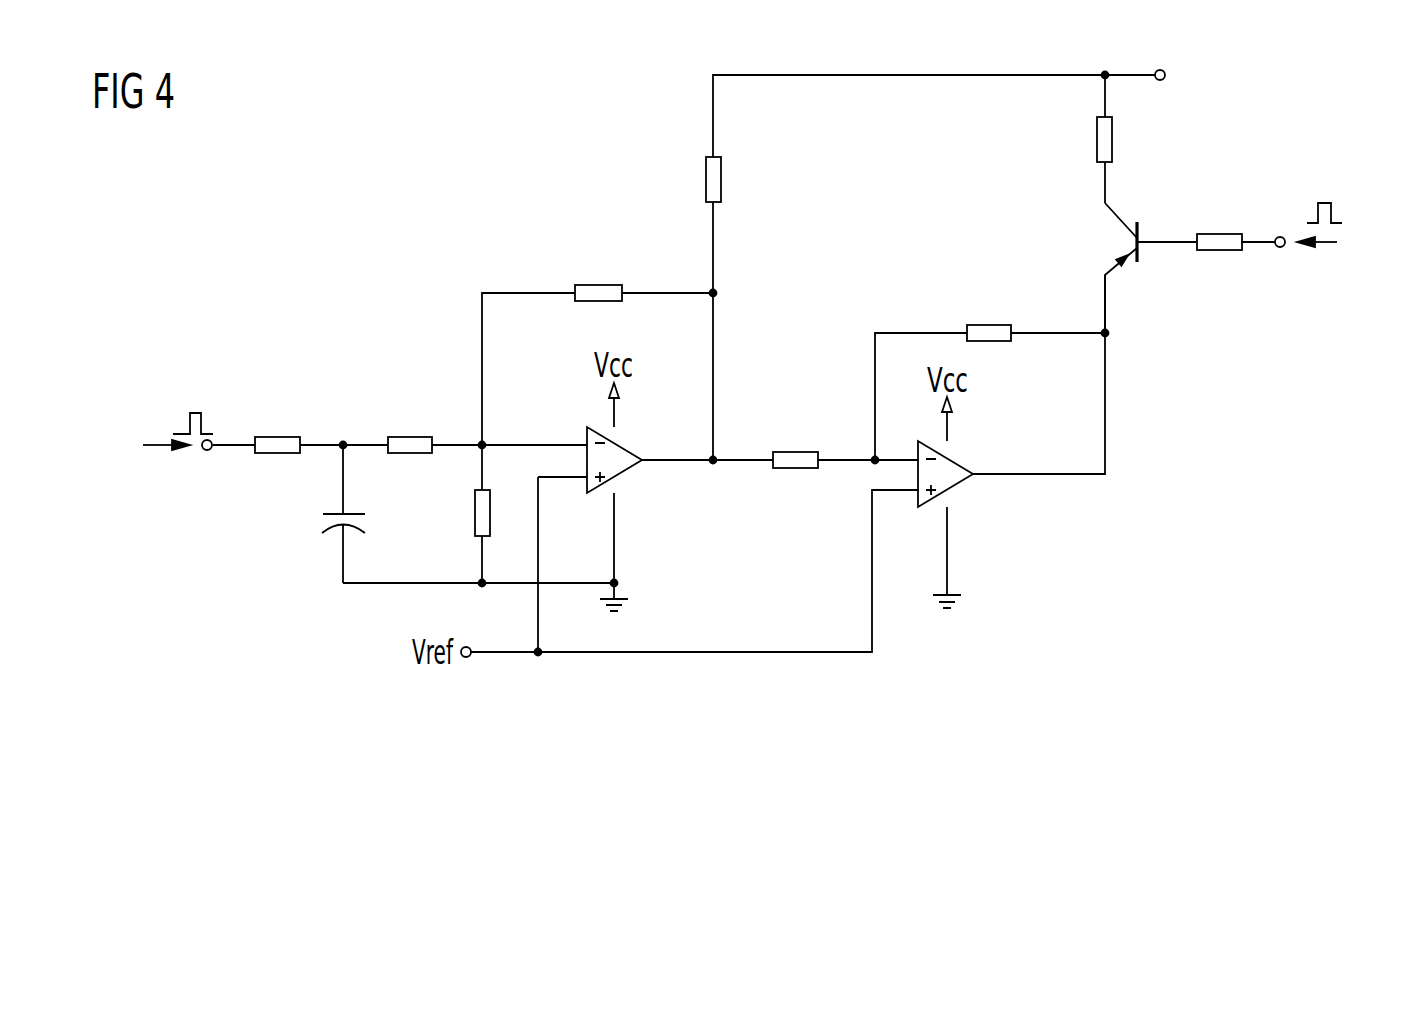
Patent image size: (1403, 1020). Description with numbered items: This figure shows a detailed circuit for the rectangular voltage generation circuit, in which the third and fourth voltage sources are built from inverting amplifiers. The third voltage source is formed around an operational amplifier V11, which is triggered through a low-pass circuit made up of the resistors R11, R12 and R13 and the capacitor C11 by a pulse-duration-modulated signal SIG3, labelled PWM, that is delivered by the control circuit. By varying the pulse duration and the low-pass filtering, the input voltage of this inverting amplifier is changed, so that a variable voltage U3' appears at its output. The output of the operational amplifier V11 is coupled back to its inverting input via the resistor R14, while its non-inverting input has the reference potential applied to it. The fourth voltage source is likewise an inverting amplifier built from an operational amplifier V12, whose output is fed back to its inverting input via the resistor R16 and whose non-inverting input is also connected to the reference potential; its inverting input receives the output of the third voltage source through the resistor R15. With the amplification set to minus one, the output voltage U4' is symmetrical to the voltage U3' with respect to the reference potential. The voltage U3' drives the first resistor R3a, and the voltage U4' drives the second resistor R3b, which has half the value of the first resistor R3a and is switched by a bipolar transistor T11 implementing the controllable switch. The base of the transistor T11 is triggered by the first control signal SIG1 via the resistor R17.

The resistor R11 is at (280, 437).
The resistor R12 is at (407, 437).
The resistor R13 is at (476, 512).
The resistor R14 is at (598, 285).
The resistor R15 is at (795, 452).
The resistor R16 is at (990, 325).
The resistor R17 is at (1220, 234).
The first resistor R3a is at (721, 178).
The second resistor R3b is at (1097, 140).
The capacitor C11 is at (323, 519).
The operational amplifier V11 is at (652, 420).
The operational amplifier V12 is at (957, 461).
The bipolar transistor T11 is at (1135, 241).
The pulse-duration-modulated signal SIG3 is at (150, 445).
The pulse width modulated signal PWM is at (194, 403).
The first control signal SIG1 is at (1336, 232).
The variable voltage U3' is at (716, 482).
The output voltage U4' is at (1132, 334).